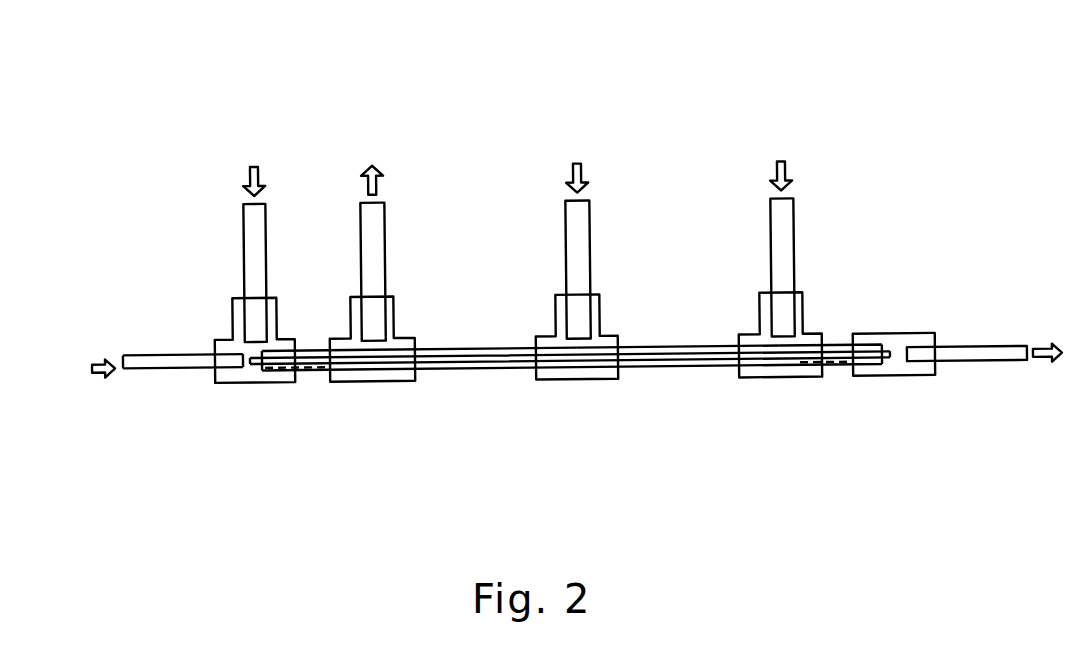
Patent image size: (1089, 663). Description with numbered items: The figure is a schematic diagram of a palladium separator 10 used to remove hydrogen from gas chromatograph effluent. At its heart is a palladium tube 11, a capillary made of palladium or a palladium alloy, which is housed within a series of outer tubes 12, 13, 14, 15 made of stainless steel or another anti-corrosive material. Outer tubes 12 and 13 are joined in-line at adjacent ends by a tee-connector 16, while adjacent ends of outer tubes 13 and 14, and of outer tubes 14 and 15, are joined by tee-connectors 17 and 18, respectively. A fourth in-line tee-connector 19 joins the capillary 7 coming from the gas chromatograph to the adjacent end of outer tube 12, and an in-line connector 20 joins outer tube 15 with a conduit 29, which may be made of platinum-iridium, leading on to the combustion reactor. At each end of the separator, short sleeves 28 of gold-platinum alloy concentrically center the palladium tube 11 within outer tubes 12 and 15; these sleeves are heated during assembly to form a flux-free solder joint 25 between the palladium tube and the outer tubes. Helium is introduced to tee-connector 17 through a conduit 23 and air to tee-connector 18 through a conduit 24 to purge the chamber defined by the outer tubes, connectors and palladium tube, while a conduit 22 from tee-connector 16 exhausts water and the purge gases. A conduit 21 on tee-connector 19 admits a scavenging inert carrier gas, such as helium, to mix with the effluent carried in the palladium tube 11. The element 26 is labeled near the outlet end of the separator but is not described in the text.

The capillary 7 is at (137, 373).
The palladium separator 10 is at (519, 80).
The palladium tube 11 is at (442, 369).
The outer tube 12 is at (325, 376).
The outer tube 13 is at (510, 370).
The outer tube 14 is at (678, 366).
The outer tube 15 is at (830, 373).
The tee-connector 16 is at (378, 384).
The tee-connector 17 is at (582, 373).
The tee-connector 18 is at (750, 378).
The tee-connector 19 is at (220, 381).
The in-line connector 20 is at (927, 376).
The conduit 21 is at (246, 247).
The conduit 22 is at (388, 261).
The conduit 23 is at (592, 254).
The conduit 24 is at (797, 247).
The solder joint 25 is at (247, 384).
The inner tube outlet end 26 is at (887, 378).
The sleeve 28 is at (304, 374).
The conduit 29 is at (995, 346).